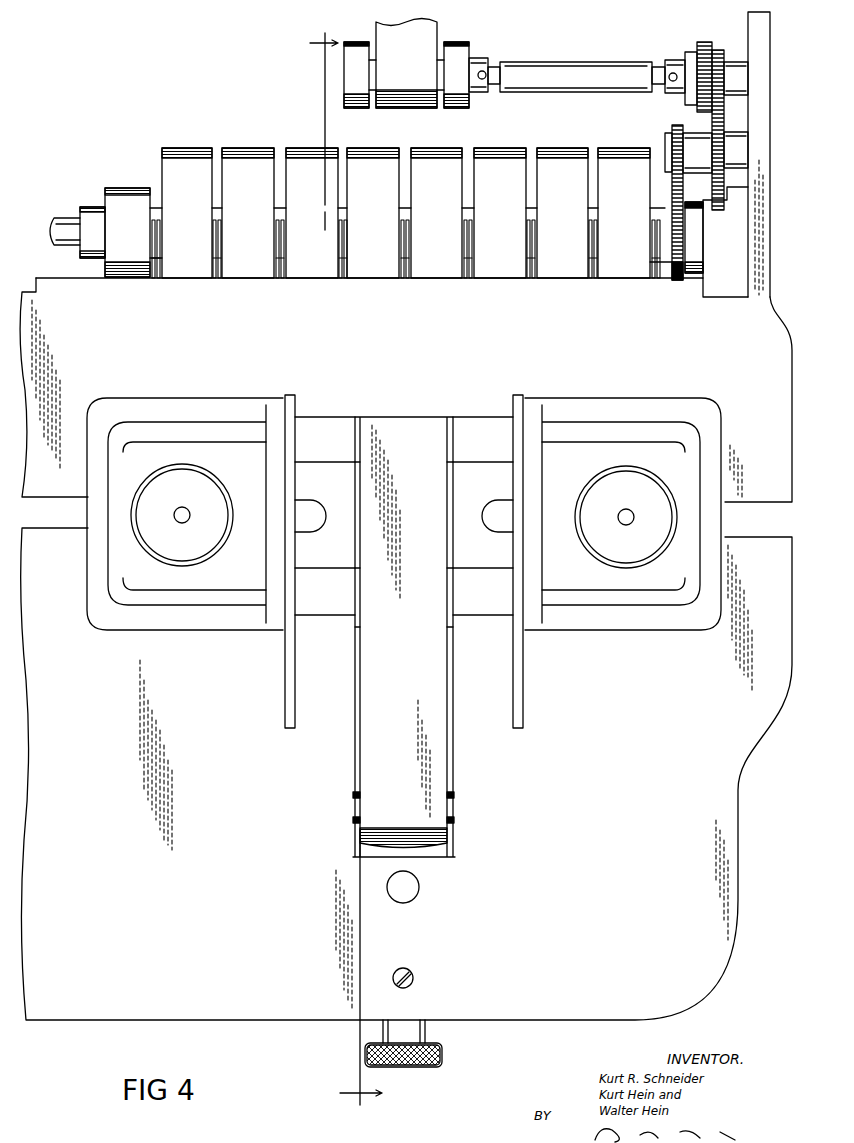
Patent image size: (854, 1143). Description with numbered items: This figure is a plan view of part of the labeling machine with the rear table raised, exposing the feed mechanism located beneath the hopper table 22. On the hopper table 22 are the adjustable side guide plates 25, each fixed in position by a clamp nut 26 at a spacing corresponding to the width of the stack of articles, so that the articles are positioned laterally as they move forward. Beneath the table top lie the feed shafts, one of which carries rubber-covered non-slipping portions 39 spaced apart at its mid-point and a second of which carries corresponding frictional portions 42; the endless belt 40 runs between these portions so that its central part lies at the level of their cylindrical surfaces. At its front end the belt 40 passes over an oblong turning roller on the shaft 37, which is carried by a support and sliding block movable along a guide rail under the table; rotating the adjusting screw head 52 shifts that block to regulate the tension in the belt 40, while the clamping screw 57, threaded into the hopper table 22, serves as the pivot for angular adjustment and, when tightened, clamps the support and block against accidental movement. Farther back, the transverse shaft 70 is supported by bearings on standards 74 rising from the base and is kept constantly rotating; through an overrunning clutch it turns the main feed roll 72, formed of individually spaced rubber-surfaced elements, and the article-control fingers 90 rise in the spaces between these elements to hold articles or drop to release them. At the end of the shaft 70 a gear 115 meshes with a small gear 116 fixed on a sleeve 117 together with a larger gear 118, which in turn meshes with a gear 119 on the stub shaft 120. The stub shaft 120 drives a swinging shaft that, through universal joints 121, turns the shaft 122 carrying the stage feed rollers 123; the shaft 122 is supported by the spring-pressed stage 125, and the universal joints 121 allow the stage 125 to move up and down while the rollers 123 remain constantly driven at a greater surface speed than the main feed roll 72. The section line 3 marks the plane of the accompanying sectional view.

The section line 3- 3 is at (337, 569).
The hopper table 22 is at (725, 908).
The side guide plate 25 is at (288, 395).
The clamp nut 26 is at (404, 516).
The shaft 37 is at (455, 803).
The non-slipping portion 39 is at (404, 439).
The endless belt 40 is at (404, 637).
The frictional portion 42 is at (404, 591).
The adjusting screw head 52 is at (441, 1051).
The clamping screw 57 is at (418, 893).
The transverse shaft 70 is at (75, 218).
The main feed roll 72 is at (302, 150).
The standard 74 is at (749, 290).
The article-control finger 90 is at (280, 252).
The gear 115 is at (675, 282).
The small gear 116 is at (670, 128).
The sleeve 117 is at (701, 203).
The larger gear 118 is at (723, 132).
The gear 119 is at (705, 48).
The stub shaft 120 is at (556, 72).
The universal joint 121 is at (492, 68).
The shaft 122 is at (477, 92).
The stage feed roller 123 is at (350, 42).
The stage 125 is at (406, 64).